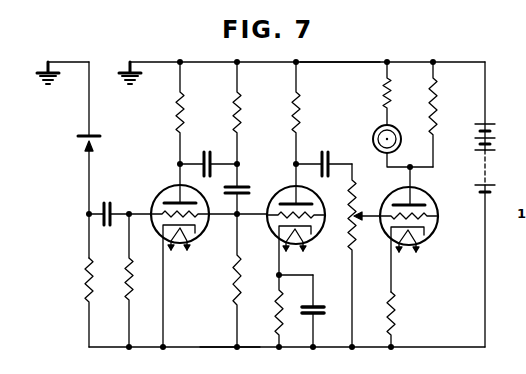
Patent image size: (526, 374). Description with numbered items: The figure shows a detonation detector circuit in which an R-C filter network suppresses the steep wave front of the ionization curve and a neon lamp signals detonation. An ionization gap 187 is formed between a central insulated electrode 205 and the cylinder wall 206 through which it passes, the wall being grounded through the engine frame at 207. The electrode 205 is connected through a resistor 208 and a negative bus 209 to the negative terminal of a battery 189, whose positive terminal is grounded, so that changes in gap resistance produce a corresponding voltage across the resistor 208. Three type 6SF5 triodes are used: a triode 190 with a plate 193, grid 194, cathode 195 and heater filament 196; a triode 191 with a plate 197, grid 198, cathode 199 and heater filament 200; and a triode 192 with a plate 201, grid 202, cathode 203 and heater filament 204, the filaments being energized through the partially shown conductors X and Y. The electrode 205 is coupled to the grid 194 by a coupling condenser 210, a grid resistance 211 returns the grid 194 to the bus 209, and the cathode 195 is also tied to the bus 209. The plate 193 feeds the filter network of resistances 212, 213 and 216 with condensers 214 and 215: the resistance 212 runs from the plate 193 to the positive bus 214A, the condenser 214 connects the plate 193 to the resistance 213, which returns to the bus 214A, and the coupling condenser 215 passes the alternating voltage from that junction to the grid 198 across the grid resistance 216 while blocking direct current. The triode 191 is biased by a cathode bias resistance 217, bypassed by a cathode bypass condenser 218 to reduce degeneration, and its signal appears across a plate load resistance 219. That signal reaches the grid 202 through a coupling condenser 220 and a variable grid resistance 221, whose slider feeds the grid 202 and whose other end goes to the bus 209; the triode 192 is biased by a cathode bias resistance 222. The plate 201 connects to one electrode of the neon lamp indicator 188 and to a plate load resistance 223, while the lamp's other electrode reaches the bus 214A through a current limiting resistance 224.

The ionization gap 187 is at (85, 142).
The neon lamp indicator 188 is at (374, 132).
The battery 189 is at (473, 141).
The vacuum tube 190 is at (153, 198).
The vacuum tube 191 is at (275, 193).
The vacuum tube 192 is at (384, 205).
The plate 193 is at (170, 190).
The grid 194 is at (198, 203).
The cathode 195 is at (202, 222).
The heater filament 196 is at (200, 236).
The plate 197 is at (290, 190).
The grid 198 is at (322, 205).
The cathode 199 is at (314, 229).
The heater filament 200 is at (307, 241).
The plate 201 is at (398, 196).
The grid 202 is at (437, 210).
The cathode 203 is at (433, 220).
The heater filament 204 is at (430, 236).
The central insulated electrode 205 is at (87, 146).
The cylinder wall 206 is at (80, 133).
The ground 207 is at (45, 82).
The resistor 208 is at (84, 270).
The negative bus 209 is at (229, 348).
The coupling condenser 210 is at (114, 187).
The grid resistance 211 is at (125, 272).
The resistance 212 is at (184, 115).
The resistance 213 is at (242, 115).
The condenser 214 is at (207, 150).
The positive bus 214A is at (336, 62).
The coupling condenser 215 is at (246, 189).
The grid resistance 216 is at (233, 284).
The cathode bias resistance 217 is at (274, 310).
The cathode bypass condenser 218 is at (326, 310).
The plate load resistance 219 is at (301, 115).
The coupling condenser 220 is at (329, 152).
The variable grid resistance 221 is at (356, 246).
The cathode bias resistance 222 is at (396, 316).
The plate load resistance 223 is at (437, 112).
The current limiting resistance 224 is at (390, 96).